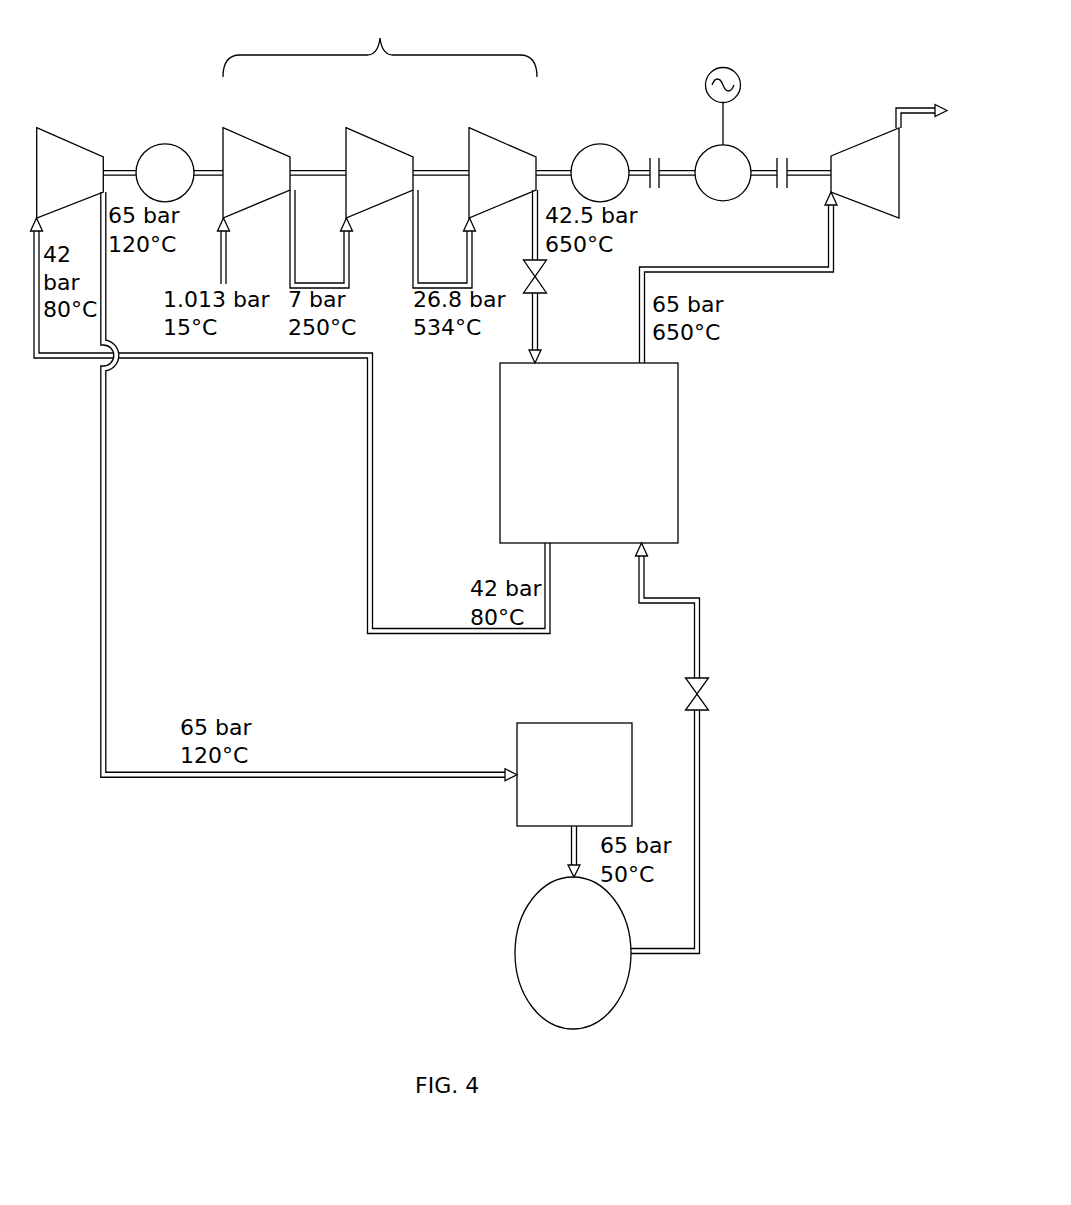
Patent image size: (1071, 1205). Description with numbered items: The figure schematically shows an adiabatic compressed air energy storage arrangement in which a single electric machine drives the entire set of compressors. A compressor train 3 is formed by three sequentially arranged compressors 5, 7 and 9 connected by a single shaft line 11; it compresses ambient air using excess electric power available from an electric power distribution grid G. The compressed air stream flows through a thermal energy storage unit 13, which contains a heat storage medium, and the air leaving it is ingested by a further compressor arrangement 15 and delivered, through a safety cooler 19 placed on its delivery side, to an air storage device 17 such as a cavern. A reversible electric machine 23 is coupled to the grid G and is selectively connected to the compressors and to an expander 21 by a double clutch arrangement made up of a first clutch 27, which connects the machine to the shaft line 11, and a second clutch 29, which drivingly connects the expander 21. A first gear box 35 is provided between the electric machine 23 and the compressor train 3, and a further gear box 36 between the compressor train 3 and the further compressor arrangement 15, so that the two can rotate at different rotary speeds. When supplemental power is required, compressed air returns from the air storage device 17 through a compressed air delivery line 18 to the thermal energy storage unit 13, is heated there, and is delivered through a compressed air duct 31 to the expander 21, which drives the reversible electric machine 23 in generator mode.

The compressor train 3 is at (380, 38).
The compressor 5 is at (256, 140).
The compressor 7 is at (394, 140).
The compressor 9 is at (490, 135).
The shaft line 11 is at (310, 170).
The thermal energy storage unit 13 is at (500, 462).
The further compressor arrangement 15 is at (70, 137).
The air storage device 17 is at (515, 950).
The compressed air delivery line 18 is at (700, 884).
The safety cooler 19 is at (517, 733).
The expander 21 is at (848, 140).
The reversible electric machine 23 is at (722, 201).
The first clutch 27 is at (649, 158).
The second clutch 29 is at (787, 158).
The compressed air duct 31 is at (798, 273).
The first gear box 35 is at (594, 143).
The further gear box 36 is at (158, 143).
The electric power distribution grid G is at (740, 72).